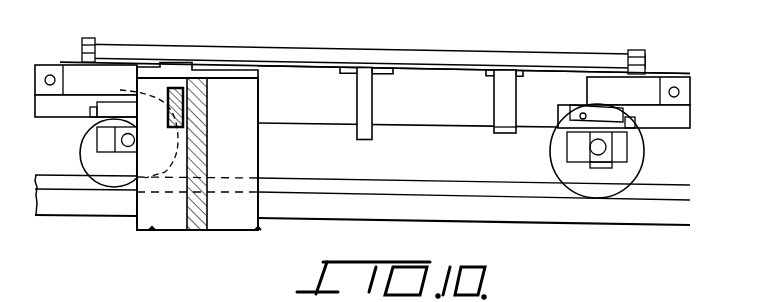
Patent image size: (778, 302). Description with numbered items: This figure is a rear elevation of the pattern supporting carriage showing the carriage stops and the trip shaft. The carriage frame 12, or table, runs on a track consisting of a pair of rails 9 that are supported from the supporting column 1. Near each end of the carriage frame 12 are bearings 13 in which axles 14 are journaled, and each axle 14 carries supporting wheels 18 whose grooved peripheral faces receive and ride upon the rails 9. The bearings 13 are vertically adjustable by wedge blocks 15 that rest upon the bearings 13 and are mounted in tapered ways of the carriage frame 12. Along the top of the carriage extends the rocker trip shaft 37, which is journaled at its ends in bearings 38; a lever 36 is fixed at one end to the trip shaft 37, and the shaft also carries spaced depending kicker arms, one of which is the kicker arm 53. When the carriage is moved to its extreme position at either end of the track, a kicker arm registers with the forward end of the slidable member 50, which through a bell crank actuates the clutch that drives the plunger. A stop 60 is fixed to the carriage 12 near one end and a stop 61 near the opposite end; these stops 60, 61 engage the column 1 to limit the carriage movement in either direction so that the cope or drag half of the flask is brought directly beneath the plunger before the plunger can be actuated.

The supporting column 1 is at (190, 147).
The rails 9 is at (362, 200).
The carriage frame 12 is at (474, 96).
The bearings 13 is at (122, 128).
The axles 14 is at (123, 143).
The wedge blocks 15 is at (93, 115).
The supporting wheels 18 is at (362, 151).
The lever 36 is at (366, 134).
The rocker trip shaft 37 is at (315, 58).
The bearings 38 is at (90, 40).
The slidable member 50 is at (207, 106).
The kicker arm 53 is at (503, 134).
The stop 60 is at (86, 80).
The stop 61 is at (638, 91).